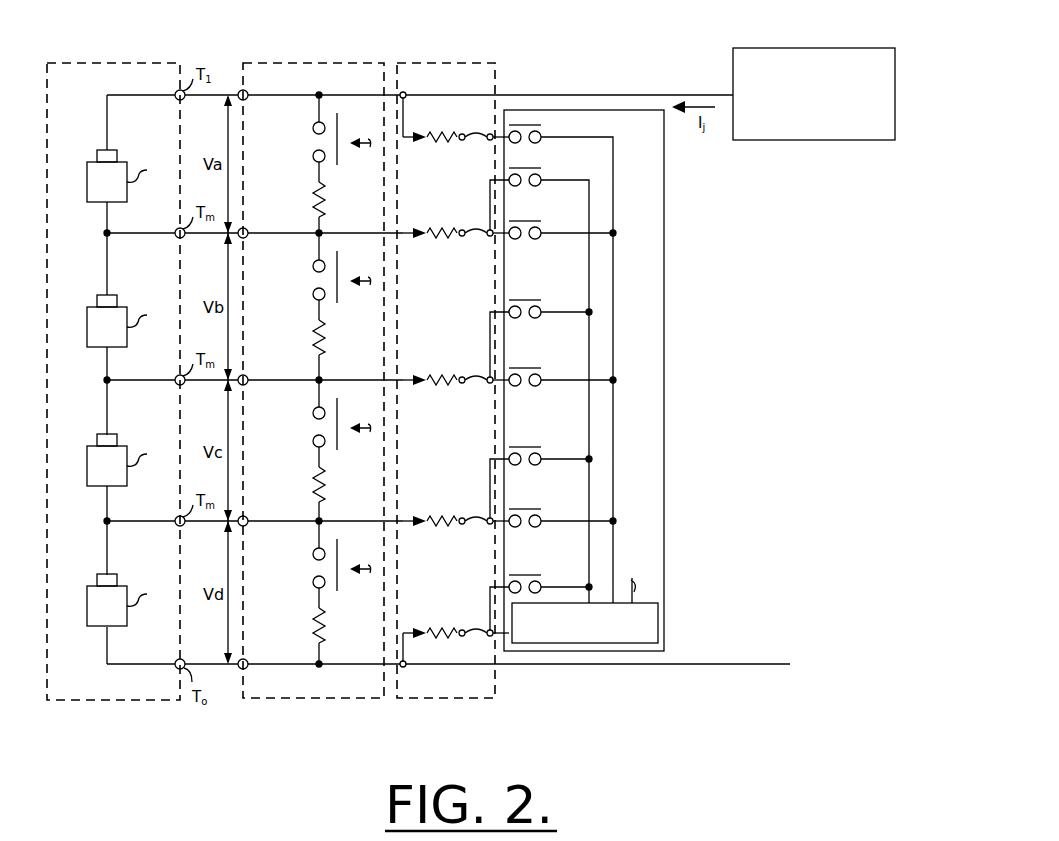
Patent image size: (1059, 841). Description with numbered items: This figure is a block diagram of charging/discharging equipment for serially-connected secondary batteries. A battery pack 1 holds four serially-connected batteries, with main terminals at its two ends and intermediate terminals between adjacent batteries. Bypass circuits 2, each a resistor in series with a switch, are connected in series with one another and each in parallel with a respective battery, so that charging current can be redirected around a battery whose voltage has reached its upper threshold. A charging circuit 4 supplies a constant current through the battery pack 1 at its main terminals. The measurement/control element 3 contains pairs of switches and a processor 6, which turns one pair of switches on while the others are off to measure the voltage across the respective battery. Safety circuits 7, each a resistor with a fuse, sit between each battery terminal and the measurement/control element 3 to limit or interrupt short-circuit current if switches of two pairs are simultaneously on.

The battery pack 1 is at (125, 63).
The bypass circuit 2 is at (357, 89).
The measurement/control element 3 is at (636, 136).
The charging circuit 4 is at (812, 48).
The processor 6 is at (588, 644).
The safety circuit 7 is at (461, 88).